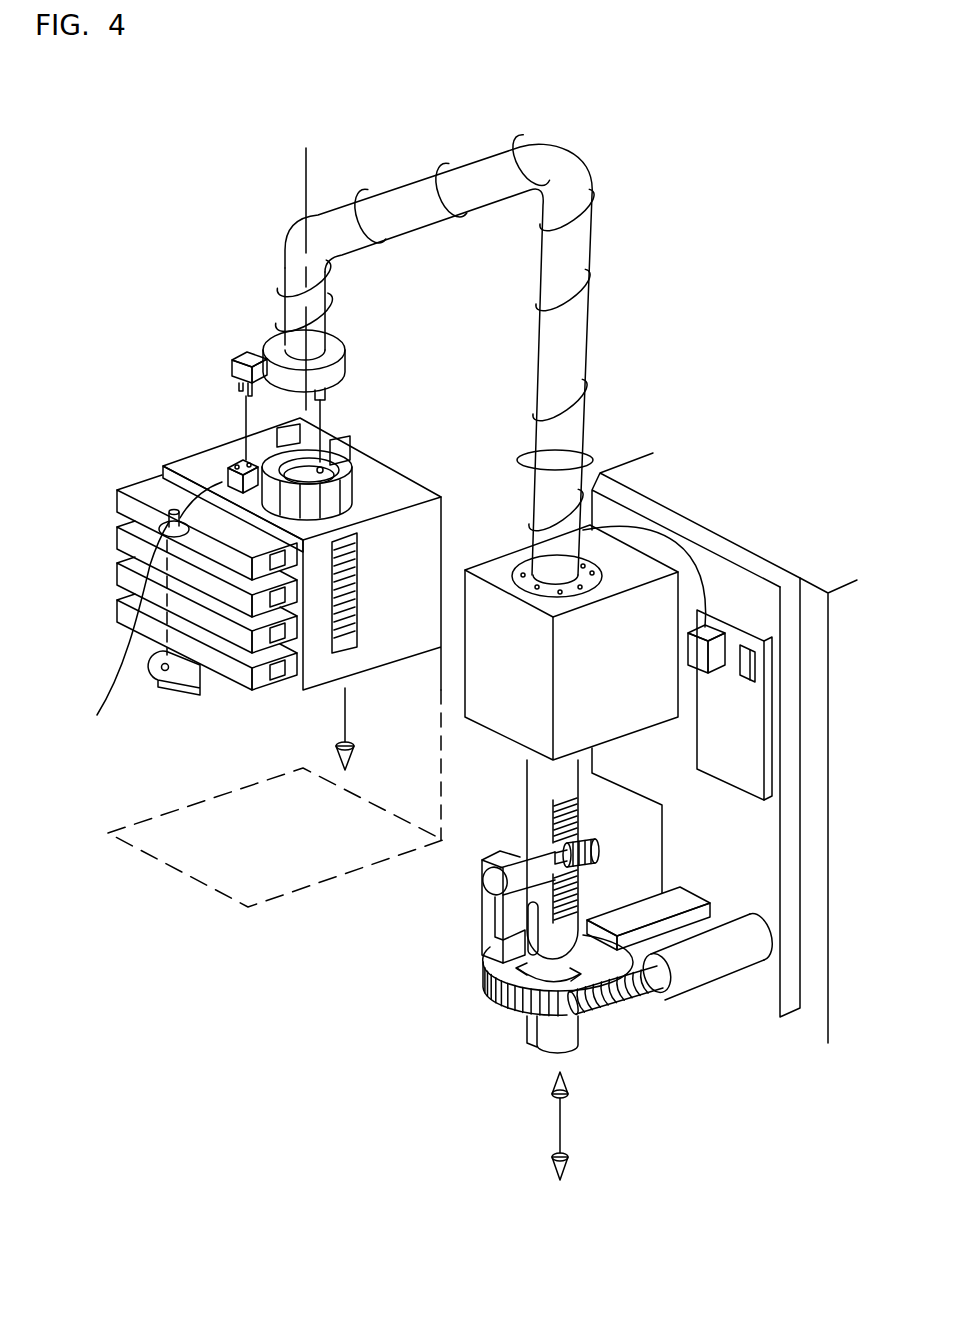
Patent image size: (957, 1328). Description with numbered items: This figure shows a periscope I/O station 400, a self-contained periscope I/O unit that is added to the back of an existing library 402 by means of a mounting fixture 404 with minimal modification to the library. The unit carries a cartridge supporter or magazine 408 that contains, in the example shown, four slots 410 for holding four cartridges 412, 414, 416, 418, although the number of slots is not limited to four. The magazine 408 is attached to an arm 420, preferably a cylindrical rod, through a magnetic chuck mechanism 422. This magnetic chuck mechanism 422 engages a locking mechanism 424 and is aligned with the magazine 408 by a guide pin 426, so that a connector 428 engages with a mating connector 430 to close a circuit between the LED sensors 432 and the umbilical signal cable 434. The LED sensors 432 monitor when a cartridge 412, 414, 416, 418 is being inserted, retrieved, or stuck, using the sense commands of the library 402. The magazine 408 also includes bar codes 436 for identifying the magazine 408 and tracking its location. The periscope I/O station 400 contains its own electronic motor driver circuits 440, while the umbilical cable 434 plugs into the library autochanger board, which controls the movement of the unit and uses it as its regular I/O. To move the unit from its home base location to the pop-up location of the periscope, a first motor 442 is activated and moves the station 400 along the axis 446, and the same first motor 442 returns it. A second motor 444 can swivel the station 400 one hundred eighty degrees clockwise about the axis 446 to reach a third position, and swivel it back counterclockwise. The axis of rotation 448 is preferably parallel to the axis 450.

The periscope I/O station 400 is at (692, 303).
The library 402 is at (748, 522).
The mounting fixture 404 is at (683, 528).
The magazine 408 is at (218, 457).
The slots 410 is at (163, 470).
The cartridge 412 is at (117, 508).
The cartridge 414 is at (117, 543).
The cartridge 416 is at (117, 581).
The cartridge 418 is at (117, 617).
The arm 420 is at (330, 207).
The magnetic chuck mechanism 422 is at (347, 358).
The locking mechanism 424 is at (363, 462).
The guide pin 426 is at (327, 400).
The connector 428 is at (237, 357).
The connector 430 is at (227, 480).
The LED sensors 432 is at (139, 608).
The umbilical signal cable 434 is at (325, 284).
The bar codes 436 is at (343, 630).
The electronic motor driver circuits 440 is at (732, 640).
The first motor 442 is at (460, 907).
The second motor 444 is at (660, 1007).
The axis 446 is at (553, 1128).
The axis of rotation 448 is at (520, 998).
The axis 450 is at (307, 167).